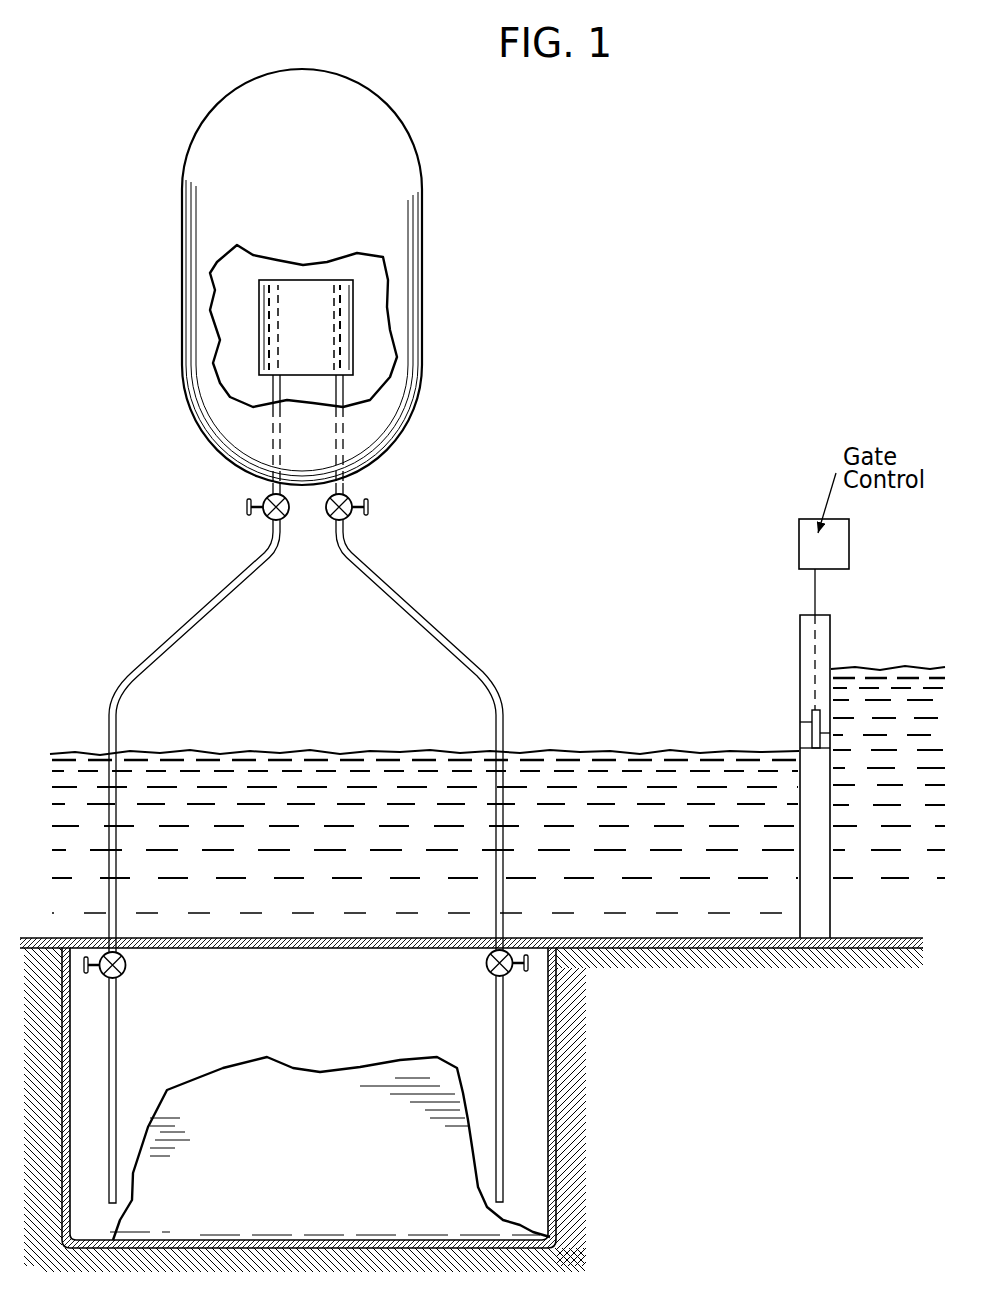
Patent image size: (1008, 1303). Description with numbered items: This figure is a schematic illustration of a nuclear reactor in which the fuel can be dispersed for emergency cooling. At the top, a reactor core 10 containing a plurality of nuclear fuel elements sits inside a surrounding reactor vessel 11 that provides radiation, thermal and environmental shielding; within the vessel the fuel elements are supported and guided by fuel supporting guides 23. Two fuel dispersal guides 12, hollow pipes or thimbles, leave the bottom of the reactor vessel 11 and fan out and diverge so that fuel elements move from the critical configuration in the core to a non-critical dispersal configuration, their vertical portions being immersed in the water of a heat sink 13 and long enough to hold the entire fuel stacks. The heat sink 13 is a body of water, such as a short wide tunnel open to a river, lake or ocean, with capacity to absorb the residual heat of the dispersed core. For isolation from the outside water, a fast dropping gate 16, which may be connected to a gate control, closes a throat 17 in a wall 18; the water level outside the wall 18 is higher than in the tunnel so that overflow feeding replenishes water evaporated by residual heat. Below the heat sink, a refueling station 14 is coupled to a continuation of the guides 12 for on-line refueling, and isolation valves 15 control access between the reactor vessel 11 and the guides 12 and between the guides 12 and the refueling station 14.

The reactor core 10 is at (366, 325).
The reactor vessel 11 is at (424, 195).
The fuel dispersal guide conduits 12 is at (434, 627).
The heat sink 13 is at (706, 867).
The refueling station 14 is at (362, 1175).
The isolation valves 15 is at (264, 519).
The fast dropping gate 16 is at (809, 726).
The throat 17 is at (798, 742).
The wall 18 is at (797, 631).
The fuel supporting guides 23 is at (352, 391).